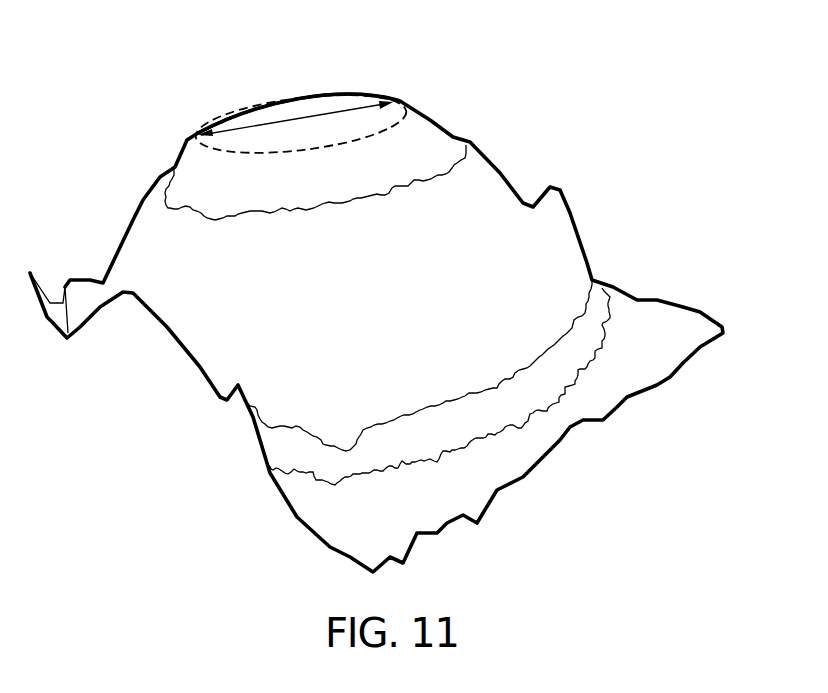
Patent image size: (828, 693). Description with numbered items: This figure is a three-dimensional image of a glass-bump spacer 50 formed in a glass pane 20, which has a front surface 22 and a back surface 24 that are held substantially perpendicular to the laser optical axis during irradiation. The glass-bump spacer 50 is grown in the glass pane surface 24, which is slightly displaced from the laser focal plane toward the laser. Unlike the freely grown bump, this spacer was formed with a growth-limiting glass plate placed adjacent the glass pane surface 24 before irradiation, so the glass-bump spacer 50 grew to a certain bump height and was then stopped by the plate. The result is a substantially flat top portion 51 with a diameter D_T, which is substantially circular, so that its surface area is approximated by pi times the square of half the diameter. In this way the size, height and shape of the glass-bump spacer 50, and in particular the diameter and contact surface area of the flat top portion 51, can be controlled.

The glass-bump spacer 50 is at (195, 97).
The substantially flat top portion 51 is at (354, 103).
The glass pane 20 is at (637, 318).
The front surface 22 is at (514, 386).
The back surface 24 is at (643, 357).